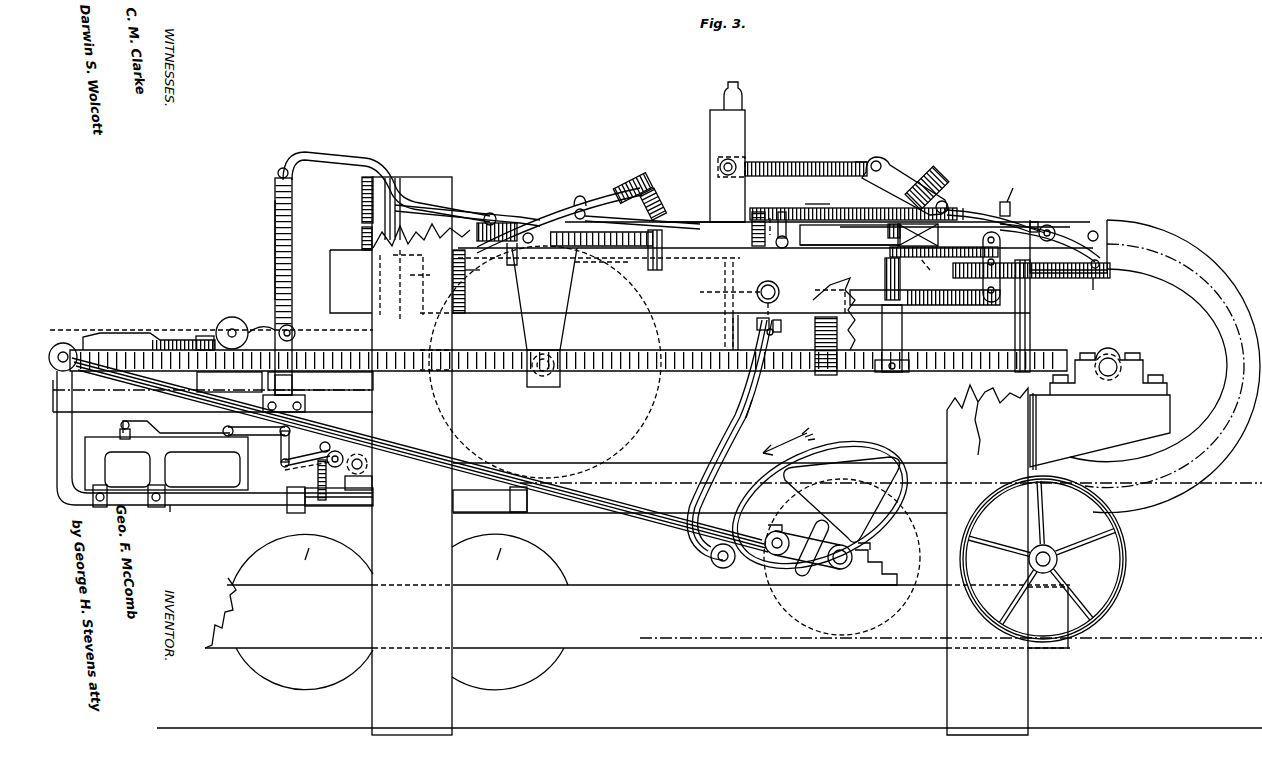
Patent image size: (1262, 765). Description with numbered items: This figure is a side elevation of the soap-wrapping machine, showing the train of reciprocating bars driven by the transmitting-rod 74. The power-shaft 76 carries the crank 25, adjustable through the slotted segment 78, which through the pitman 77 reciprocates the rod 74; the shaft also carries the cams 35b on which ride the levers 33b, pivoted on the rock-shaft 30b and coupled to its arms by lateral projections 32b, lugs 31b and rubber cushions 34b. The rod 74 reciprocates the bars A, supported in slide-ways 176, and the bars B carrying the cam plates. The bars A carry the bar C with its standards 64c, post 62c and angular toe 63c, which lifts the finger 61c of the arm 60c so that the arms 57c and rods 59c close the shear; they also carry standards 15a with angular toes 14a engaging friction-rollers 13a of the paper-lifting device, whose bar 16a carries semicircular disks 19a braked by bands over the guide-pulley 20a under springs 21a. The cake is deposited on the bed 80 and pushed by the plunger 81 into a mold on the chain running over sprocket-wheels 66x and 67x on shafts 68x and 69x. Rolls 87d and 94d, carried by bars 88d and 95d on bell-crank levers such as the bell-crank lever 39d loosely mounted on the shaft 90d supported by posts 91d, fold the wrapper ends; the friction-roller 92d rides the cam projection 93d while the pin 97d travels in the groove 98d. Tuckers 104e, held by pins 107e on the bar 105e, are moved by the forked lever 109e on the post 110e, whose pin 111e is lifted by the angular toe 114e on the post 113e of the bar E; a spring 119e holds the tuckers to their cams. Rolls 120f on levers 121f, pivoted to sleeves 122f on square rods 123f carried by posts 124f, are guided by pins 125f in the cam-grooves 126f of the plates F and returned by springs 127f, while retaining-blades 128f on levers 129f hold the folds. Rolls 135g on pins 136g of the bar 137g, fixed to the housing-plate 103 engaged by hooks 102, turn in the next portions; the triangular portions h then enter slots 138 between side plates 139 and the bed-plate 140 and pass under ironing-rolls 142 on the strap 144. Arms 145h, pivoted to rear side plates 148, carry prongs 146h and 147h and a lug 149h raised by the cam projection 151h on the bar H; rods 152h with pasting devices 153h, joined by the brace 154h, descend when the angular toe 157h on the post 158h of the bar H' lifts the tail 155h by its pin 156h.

The transmitting-rod 74 is at (61, 345).
The pitman 77 is at (412, 449).
The cam projection 93d is at (113, 333).
The groove 98d is at (163, 338).
The pin 97d is at (200, 338).
The friction-roller 92d is at (236, 313).
The shaft 90d is at (295, 333).
The posts 91d is at (292, 342).
The plunger 81 is at (229, 381).
The bed 80 is at (320, 380).
The bell-crank lever 39d is at (275, 213).
The bar 88d is at (420, 228).
The roll 87d is at (493, 212).
The bar 95d is at (548, 215).
The pins 125f is at (470, 264).
The cam-grooves 126f is at (425, 272).
The sleeves 122f is at (528, 246).
The posts 124f is at (660, 240).
The roll 94d is at (588, 208).
The levers 121f is at (632, 190).
The rolls 120f is at (662, 199).
The hooks 102 is at (598, 221).
The housing-plate 103 is at (688, 221).
The square rods 123f is at (652, 260).
The springs 127f is at (592, 262).
The retaining-blades 128f is at (725, 264).
The levers 129f is at (724, 326).
The shaft 68x is at (543, 388).
The sprocket-wheel 66x is at (545, 362).
The spring 119e is at (741, 82).
The tuckers 104e is at (729, 166).
The pins 107e is at (718, 162).
The bar 105e is at (783, 161).
The forked lever 109e is at (815, 162).
The post 110e is at (862, 196).
The paste-applying devices 153h is at (935, 176).
The pin 111e is at (965, 205).
The brace 154h is at (1040, 185).
The rods 152h is at (1049, 224).
The rear side plates 148 is at (1093, 229).
The post 113e is at (836, 210).
The angular toe 114e is at (816, 208).
The bar 137g is at (770, 218).
The side plates 139 is at (822, 218).
The pins 136g is at (742, 223).
The strap 144 is at (850, 235).
The ironing or compressing rolls 142 is at (850, 244).
The prongs 146h is at (884, 233).
The arms 145h is at (940, 236).
The tail 155h is at (1100, 240).
The pin 156h is at (1108, 262).
The prongs 147h is at (890, 252).
The bed-plate 140 is at (882, 262).
The lug 149h is at (976, 267).
The angular toe 157h is at (1062, 280).
The cam projection 151h is at (925, 299).
The post 158h is at (992, 305).
The rolls 135g is at (765, 284).
The slots 138 is at (828, 262).
The rock-shaft 30b is at (773, 319).
The lugs 31b is at (753, 332).
The rubber cushions 34b is at (765, 338).
The lateral projections 32b is at (778, 334).
The levers 33b is at (754, 410).
The cams 35b is at (845, 450).
The slotted segment 78 is at (842, 499).
The crank 25 is at (790, 548).
The power-shaft 76 is at (841, 572).
The shaft 69x is at (1112, 356).
The sprocket-wheel 67x is at (1232, 356).
The angular toe 63c is at (140, 421).
The post 62c is at (119, 428).
The finger 61c is at (227, 432).
The arm 60c is at (278, 452).
The arms 57c is at (282, 465).
The rods 59c is at (290, 470).
The guide-pulley 20a is at (322, 450).
The bar 16a is at (338, 453).
The semicircular disks 19a is at (356, 464).
The springs 21a is at (318, 478).
The standards 15a is at (372, 482).
The friction-rollers 13a is at (455, 488).
The standards 64c is at (127, 469).
The slide-ways 176 is at (530, 513).
The angular toes 14a is at (336, 508).
The reciprocating bars B is at (568, 360).
The reciprocating bar C is at (166, 472).
The reciprocating bars A is at (173, 518).
The bar E is at (971, 208).
The plates F is at (360, 242).
The bar H is at (917, 338).
The bar H' is at (1105, 289).
The triangularly-shaped portions h is at (931, 270).